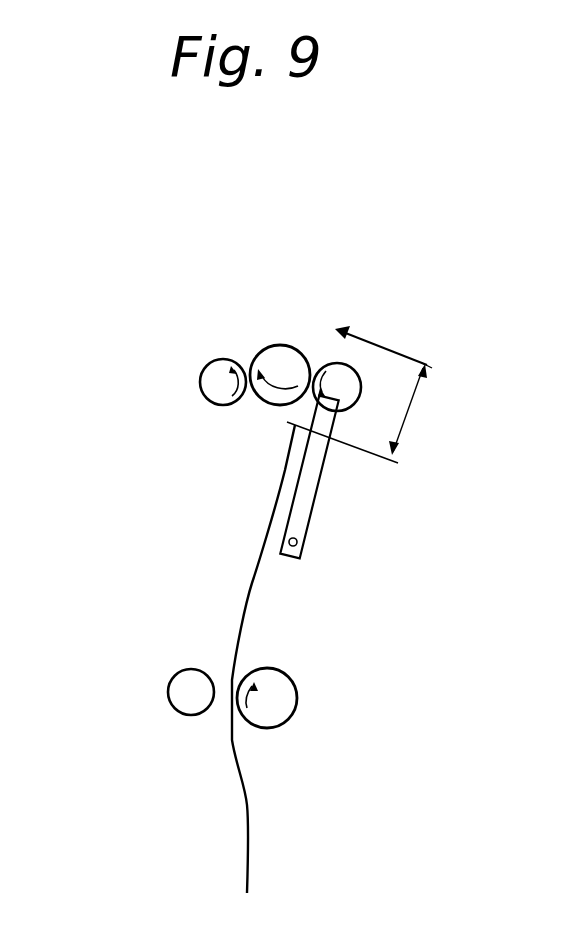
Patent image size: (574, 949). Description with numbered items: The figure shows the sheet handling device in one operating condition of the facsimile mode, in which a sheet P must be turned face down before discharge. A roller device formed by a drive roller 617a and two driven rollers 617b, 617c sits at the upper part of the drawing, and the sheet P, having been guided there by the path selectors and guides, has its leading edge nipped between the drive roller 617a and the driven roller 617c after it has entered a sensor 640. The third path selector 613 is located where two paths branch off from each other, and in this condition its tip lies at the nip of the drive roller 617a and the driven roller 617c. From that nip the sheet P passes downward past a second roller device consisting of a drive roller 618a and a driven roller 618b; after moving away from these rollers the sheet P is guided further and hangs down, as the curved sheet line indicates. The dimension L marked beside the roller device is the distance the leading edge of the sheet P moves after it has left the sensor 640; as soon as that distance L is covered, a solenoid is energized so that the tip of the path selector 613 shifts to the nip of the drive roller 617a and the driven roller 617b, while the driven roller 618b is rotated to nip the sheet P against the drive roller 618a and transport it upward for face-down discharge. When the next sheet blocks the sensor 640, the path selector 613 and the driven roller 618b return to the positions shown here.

The sheet P is at (252, 582).
The third path selector 613 is at (312, 525).
The drive roller 617a is at (277, 345).
The driven roller 617b is at (200, 378).
The driven roller 617c is at (358, 376).
The drive roller 618a is at (297, 690).
The driven roller 618b is at (168, 682).
The sensor 640 is at (340, 330).
The distance L is at (357, 413).